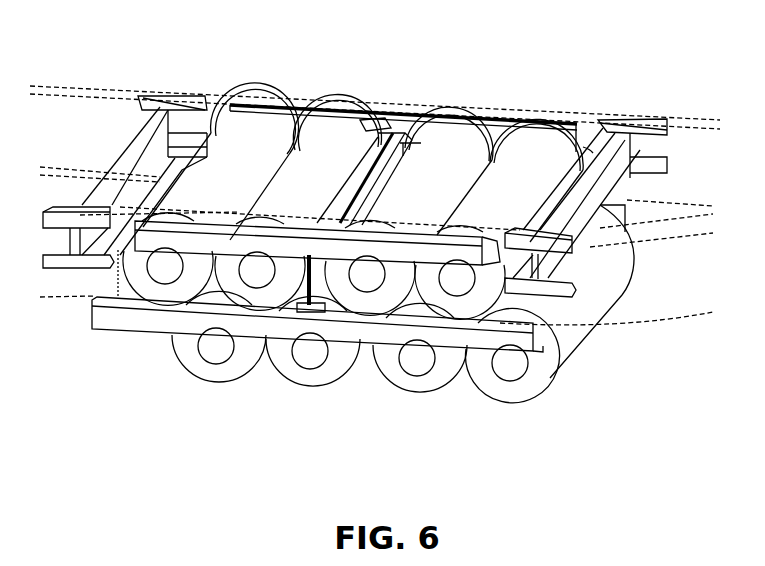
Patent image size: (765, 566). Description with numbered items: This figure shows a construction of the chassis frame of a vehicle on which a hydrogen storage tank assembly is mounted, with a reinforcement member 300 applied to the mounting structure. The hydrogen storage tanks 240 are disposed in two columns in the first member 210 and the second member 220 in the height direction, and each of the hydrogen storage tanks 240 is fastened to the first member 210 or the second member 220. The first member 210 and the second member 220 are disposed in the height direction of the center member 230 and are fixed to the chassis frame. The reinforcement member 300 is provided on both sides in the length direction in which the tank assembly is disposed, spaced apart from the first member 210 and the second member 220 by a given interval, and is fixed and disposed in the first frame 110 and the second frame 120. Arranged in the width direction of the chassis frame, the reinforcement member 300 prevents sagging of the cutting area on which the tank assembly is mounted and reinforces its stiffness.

The first frame 110 is at (670, 300).
The second frame 120 is at (692, 122).
The first member 210 is at (503, 122).
The second member 220 is at (453, 338).
The center member 230 is at (381, 140).
The hydrogen storage tanks 240 is at (307, 358).
The reinforcement member 300 is at (165, 113).